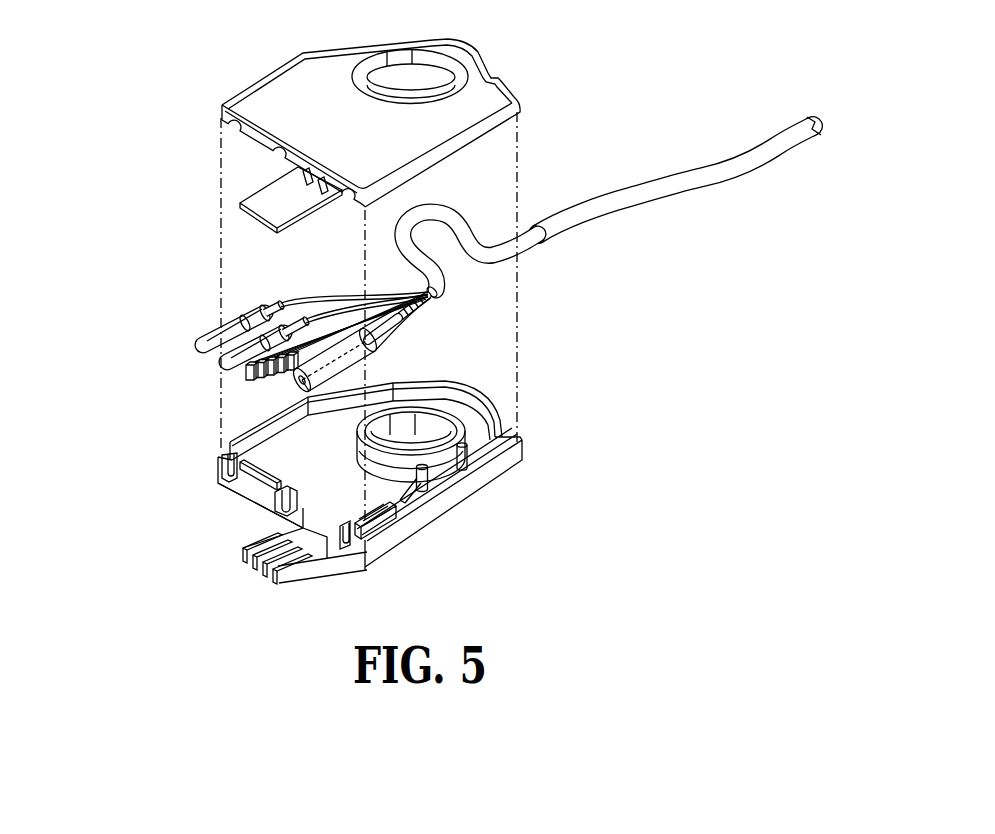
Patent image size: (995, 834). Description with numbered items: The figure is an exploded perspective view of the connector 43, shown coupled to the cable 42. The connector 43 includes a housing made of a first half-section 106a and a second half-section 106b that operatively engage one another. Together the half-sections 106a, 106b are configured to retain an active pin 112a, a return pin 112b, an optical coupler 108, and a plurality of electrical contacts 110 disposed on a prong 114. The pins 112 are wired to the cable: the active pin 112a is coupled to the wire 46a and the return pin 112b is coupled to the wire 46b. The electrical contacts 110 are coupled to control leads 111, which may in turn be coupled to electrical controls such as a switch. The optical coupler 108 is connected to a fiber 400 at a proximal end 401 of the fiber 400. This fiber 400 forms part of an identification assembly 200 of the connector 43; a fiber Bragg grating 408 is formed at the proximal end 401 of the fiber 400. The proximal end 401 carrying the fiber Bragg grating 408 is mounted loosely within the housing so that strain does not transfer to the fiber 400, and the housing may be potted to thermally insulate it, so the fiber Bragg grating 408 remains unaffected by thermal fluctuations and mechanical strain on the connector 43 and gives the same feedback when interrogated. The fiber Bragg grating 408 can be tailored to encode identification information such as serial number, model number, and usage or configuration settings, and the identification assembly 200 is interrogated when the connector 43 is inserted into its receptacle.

The cable 42 is at (680, 188).
The connector 43 is at (153, 199).
The wire 46a is at (302, 300).
The wire 46b is at (265, 310).
The first half-section 106a is at (292, 78).
The second half-section 106b is at (380, 493).
The optical coupler 108 is at (335, 375).
The electrical contacts 110 is at (250, 380).
The control leads 111 is at (340, 316).
The pins 112 is at (233, 507).
The active pin 112a is at (225, 364).
The return pin 112b is at (203, 342).
The prong 114 is at (297, 570).
The identification assembly 200 is at (403, 337).
The fiber 400 is at (425, 303).
The proximal end 401 is at (300, 384).
The fiber Bragg grating 408 is at (415, 318).